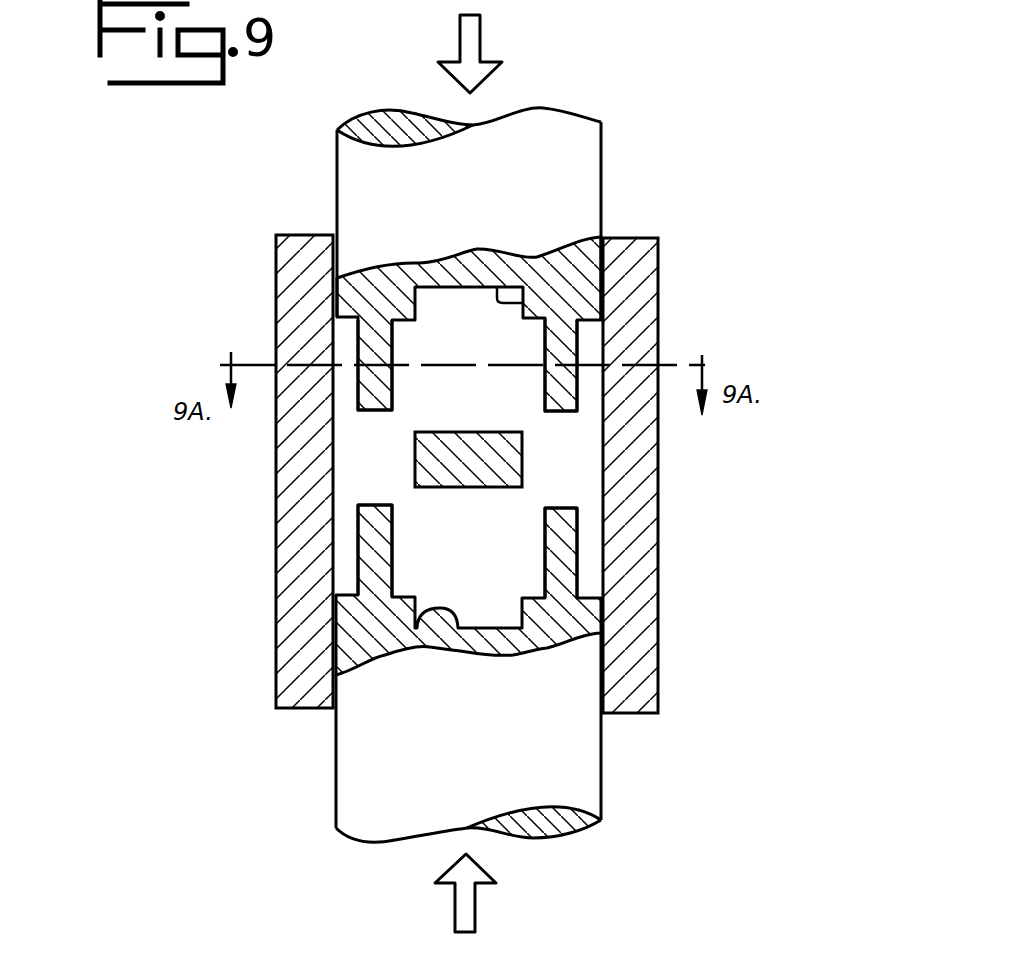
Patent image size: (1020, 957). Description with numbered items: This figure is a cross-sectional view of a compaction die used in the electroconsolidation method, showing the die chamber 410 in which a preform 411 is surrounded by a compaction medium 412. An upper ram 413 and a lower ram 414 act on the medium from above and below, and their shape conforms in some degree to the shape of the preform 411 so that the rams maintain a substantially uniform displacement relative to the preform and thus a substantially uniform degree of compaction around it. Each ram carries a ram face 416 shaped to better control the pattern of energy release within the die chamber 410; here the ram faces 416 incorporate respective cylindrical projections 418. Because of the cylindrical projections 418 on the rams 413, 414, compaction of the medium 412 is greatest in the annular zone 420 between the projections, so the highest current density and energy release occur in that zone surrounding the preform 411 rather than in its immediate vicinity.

The die chamber 410 is at (642, 627).
The preform 411 is at (505, 455).
The medium 412 is at (505, 543).
The upper ram 413 is at (585, 180).
The lower ram 414 is at (570, 778).
The ram faces 416 is at (522, 300).
The cylindrical projections 418 is at (565, 350).
The annular zone 420 is at (367, 462).